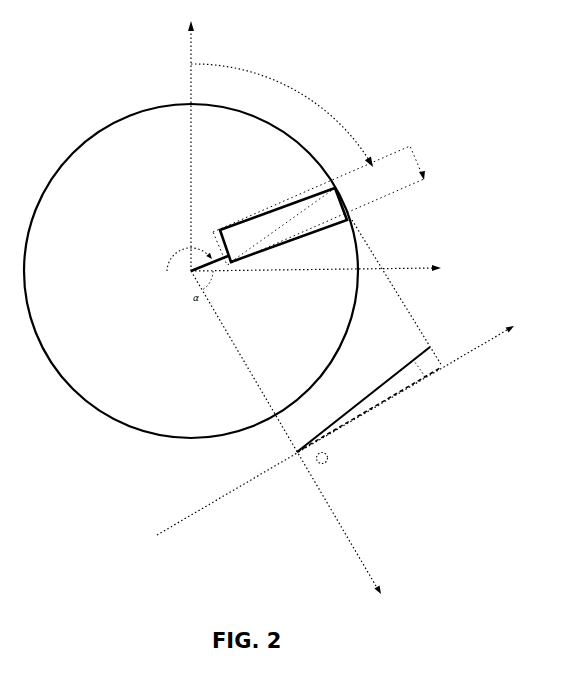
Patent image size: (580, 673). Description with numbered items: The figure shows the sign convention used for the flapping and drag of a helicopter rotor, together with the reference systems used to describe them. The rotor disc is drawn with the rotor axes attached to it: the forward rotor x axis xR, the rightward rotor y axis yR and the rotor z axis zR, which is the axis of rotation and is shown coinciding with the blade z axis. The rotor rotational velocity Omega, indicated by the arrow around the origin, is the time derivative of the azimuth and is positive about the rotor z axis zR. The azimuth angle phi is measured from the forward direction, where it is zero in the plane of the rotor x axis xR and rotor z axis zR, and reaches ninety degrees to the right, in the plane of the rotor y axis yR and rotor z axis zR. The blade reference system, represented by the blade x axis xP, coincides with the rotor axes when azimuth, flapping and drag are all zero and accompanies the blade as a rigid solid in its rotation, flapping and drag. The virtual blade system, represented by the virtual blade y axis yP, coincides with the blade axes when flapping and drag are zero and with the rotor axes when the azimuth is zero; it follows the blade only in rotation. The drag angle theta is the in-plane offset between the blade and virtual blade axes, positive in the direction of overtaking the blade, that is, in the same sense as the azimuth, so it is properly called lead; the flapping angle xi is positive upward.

The rotor x axis xR is at (199, 146).
The rotor y axis yR is at (316, 259).
The rotor z axis zR is at (305, 432).
The blade x axis xP is at (336, 430).
The virtual blade y axis yP is at (335, 458).
The azimuth angle phi is at (282, 115).
The drag angle theta is at (379, 336).
The rotor rotational velocity Omega is at (179, 255).
The flapping angle xi is at (323, 205).